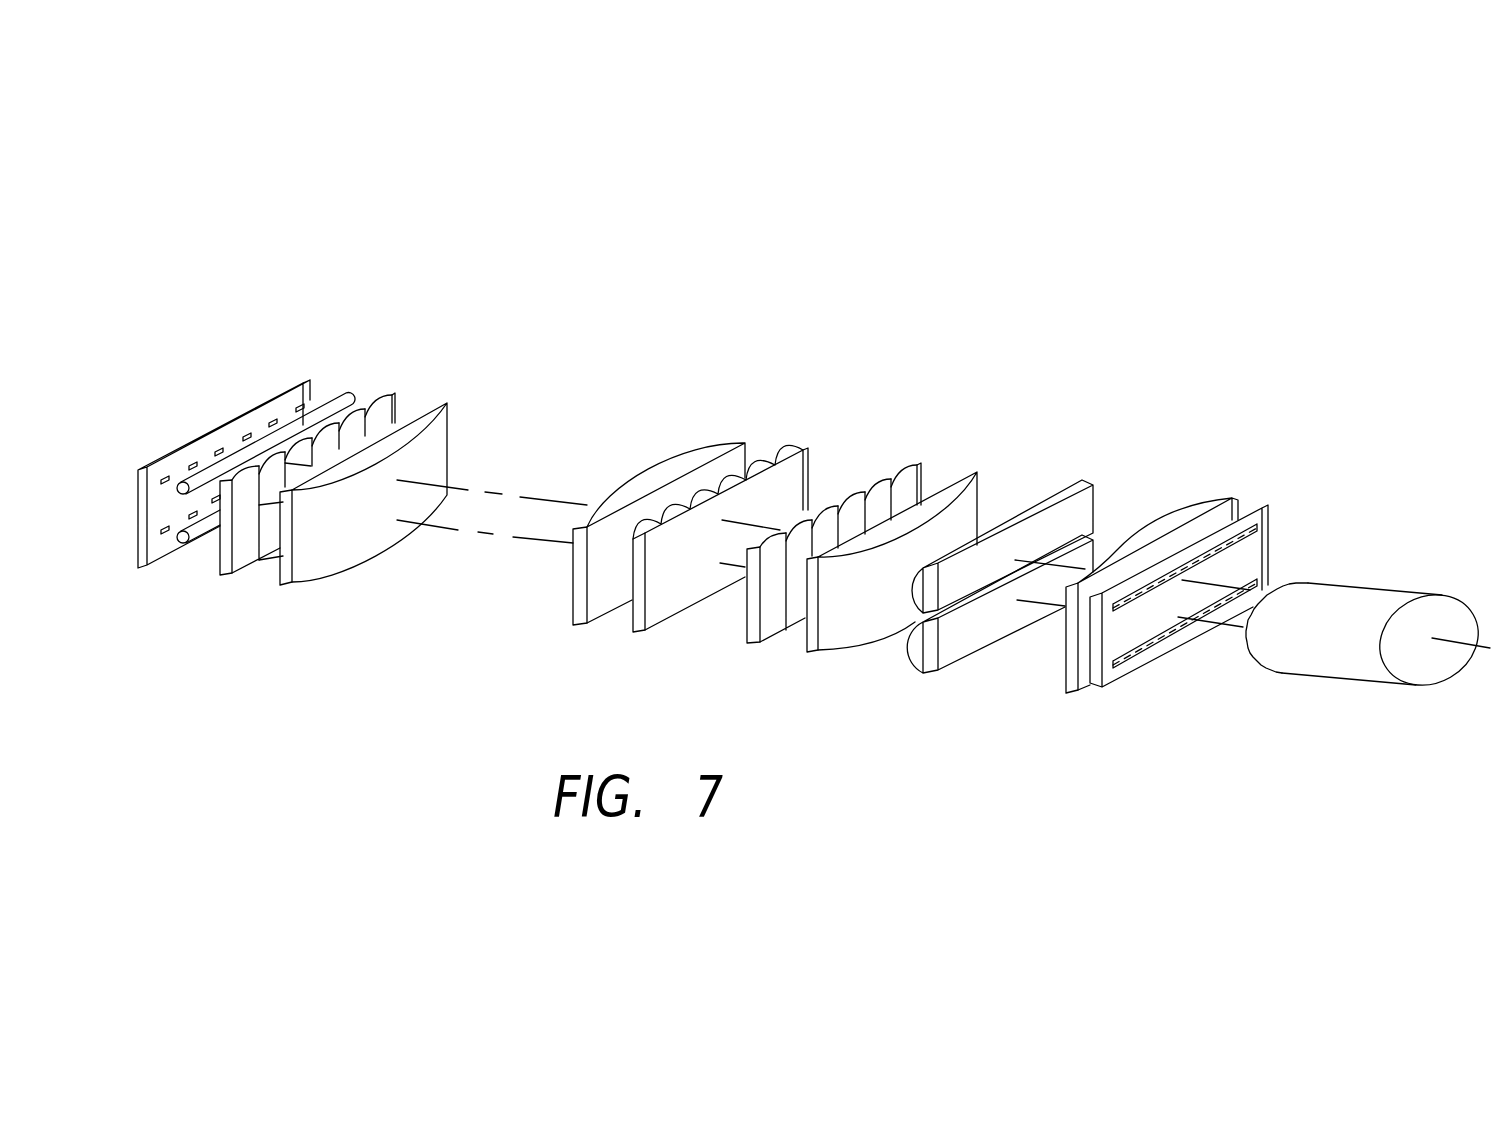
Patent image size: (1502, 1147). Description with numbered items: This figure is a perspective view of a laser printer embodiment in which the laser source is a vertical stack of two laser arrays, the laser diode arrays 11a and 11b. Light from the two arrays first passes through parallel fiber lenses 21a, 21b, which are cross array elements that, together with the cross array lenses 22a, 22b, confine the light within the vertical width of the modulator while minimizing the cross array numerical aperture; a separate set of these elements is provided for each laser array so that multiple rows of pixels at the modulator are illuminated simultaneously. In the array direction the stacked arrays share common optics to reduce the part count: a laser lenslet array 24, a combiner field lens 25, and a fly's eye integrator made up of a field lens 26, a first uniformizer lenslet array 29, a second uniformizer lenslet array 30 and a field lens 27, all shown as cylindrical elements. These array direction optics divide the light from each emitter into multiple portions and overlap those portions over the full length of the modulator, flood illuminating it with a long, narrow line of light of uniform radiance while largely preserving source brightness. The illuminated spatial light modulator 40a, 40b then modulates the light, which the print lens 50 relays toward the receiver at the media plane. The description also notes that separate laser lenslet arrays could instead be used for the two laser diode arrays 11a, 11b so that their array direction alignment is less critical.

The laser diode array 11a is at (226, 540).
The laser diode array 11b is at (190, 514).
The fiber lens 21a is at (278, 516).
The fiber lens 21b is at (204, 532).
The laser lenslet array 24 is at (382, 392).
The combiner field lens 25 is at (437, 418).
The field lens 26 is at (700, 457).
The first uniformizer lenslet array 29 is at (797, 453).
The second uniformizer lenslet array 30 is at (907, 460).
The field lens 27 is at (963, 468).
The cross array lens 22a is at (1000, 618).
The cross array lens 22b is at (982, 623).
The spatial light modulator 40a is at (1185, 624).
The spatial light modulator 40b is at (1150, 633).
The print lens 50 is at (1345, 605).